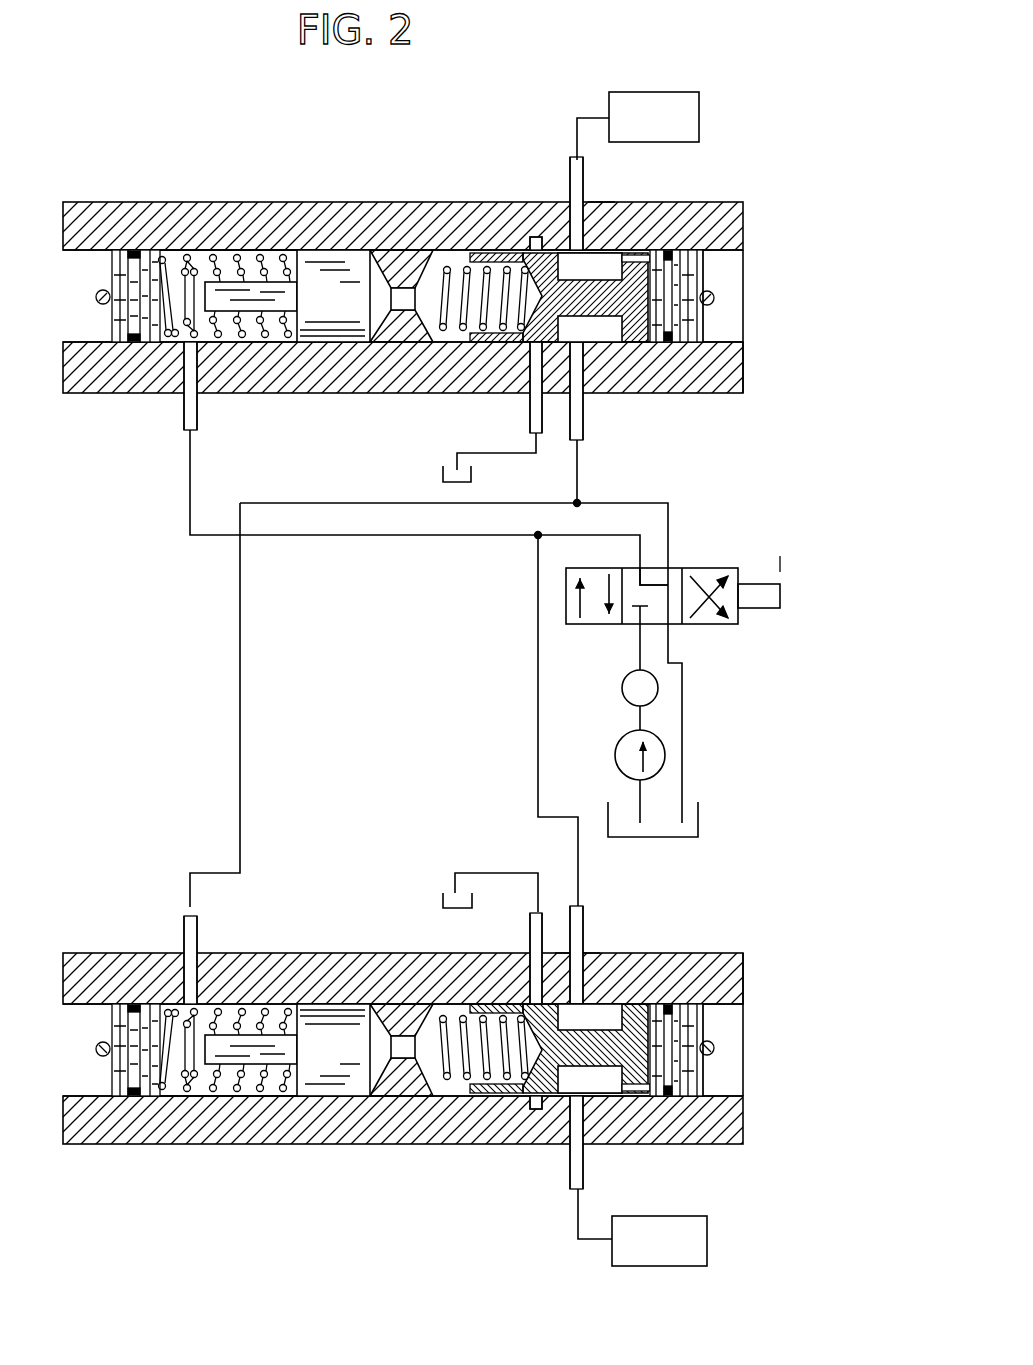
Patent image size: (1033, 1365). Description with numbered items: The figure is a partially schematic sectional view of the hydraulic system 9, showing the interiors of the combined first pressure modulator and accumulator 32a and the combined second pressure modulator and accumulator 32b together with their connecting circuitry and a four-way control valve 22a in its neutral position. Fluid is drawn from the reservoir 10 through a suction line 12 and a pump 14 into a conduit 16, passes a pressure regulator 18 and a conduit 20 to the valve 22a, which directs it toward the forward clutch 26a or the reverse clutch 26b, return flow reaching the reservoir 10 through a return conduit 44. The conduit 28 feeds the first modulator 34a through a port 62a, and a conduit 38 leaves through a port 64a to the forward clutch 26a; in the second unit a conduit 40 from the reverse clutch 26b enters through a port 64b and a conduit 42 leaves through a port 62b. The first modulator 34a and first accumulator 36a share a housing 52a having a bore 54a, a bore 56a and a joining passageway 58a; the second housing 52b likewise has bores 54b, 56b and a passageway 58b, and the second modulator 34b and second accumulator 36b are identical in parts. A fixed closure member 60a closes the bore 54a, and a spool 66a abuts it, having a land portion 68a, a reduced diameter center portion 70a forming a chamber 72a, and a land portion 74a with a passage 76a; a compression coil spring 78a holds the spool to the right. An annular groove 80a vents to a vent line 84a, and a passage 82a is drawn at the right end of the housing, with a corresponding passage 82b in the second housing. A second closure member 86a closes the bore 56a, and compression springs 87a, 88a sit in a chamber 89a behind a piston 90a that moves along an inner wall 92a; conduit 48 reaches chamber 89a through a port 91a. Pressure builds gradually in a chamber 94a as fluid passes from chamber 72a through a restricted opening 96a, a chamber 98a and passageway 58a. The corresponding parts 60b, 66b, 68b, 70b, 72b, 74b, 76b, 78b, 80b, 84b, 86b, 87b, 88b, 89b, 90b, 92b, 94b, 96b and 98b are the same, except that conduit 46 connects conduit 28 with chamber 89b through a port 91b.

The hydraulic system 9 is at (194, 598).
The hydraulic reservoir 10 is at (700, 815).
The suction line 12 is at (630, 790).
The pump 14 is at (617, 750).
The conduit 16 is at (640, 716).
The pressure regulator 18 is at (623, 688).
The conduit 20 is at (640, 642).
The four-way control valve 22a is at (680, 568).
The forward clutch 26a is at (690, 92).
The reverse clutch 26b is at (710, 1266).
The conduit 28 is at (600, 503).
The combined first pressure modulator and accumulator 32a is at (347, 192).
The combined second pressure modulator and accumulator 32b is at (323, 926).
The first modulator 34a is at (568, 202).
The second modulator 34b is at (487, 921).
The first accumulator 36a is at (126, 204).
The second accumulator 36b is at (103, 950).
The conduit 38 is at (573, 158).
The conduit 40 is at (572, 1190).
The conduit 42 is at (540, 585).
The return conduit 44 is at (682, 682).
The conduit 46 is at (320, 503).
The conduit 48 is at (184, 430).
The housing 52a is at (278, 203).
The housing 52b is at (268, 950).
The bore 54a is at (738, 262).
The bore 54b is at (740, 1010).
The bore 56a is at (78, 340).
The bore 56b is at (78, 1085).
The passageway 58a is at (508, 257).
The passageway 58b is at (405, 1040).
The fixed closure member 60a is at (702, 325).
The fixed closure member 60b is at (700, 1075).
The port 62a is at (587, 393).
The port 62b is at (592, 1000).
The port 64a is at (601, 203).
The port 64b is at (600, 1147).
The spool 66a is at (590, 330).
The spool 66b is at (590, 1048).
The land portion 68a is at (475, 252).
The land portion 68b is at (478, 1008).
The reduced diameter center portion 70a is at (628, 255).
The reduced diameter center portion 70b is at (628, 1015).
The chamber 72a is at (651, 255).
The chamber 72b is at (668, 960).
The land portion 74a is at (650, 345).
The land portion 74b is at (645, 1100).
The passage 76a is at (692, 203).
The passage 76b is at (700, 960).
The compression coil spring 78a is at (445, 336).
The compression coil spring 78b is at (450, 1095).
The annular groove 80a is at (535, 237).
The annular groove 80b is at (540, 1110).
The passage 82a is at (740, 345).
The passage 82b is at (740, 1098).
The vent line 84a is at (528, 430).
The vent line 84b is at (540, 912).
The second closure member 86a is at (112, 272).
The second closure member 86b is at (112, 1015).
The compression spring 87a is at (178, 252).
The compression spring 87b is at (168, 995).
The compression spring 88a is at (189, 342).
The compression spring 88b is at (180, 1092).
The chamber 89a is at (255, 332).
The chamber 89b is at (255, 1085).
The piston 90a is at (323, 309).
The piston 90b is at (323, 1064).
The port 91a is at (168, 345).
The port 91b is at (205, 1000).
The inner wall 92a is at (222, 280).
The inner wall 92b is at (233, 1098).
The chamber 94a is at (378, 312).
The chamber 94b is at (390, 1080).
The restricted opening 96a is at (590, 268).
The restricted opening 96b is at (590, 1053).
The chamber 98a is at (490, 342).
The chamber 98b is at (478, 1095).